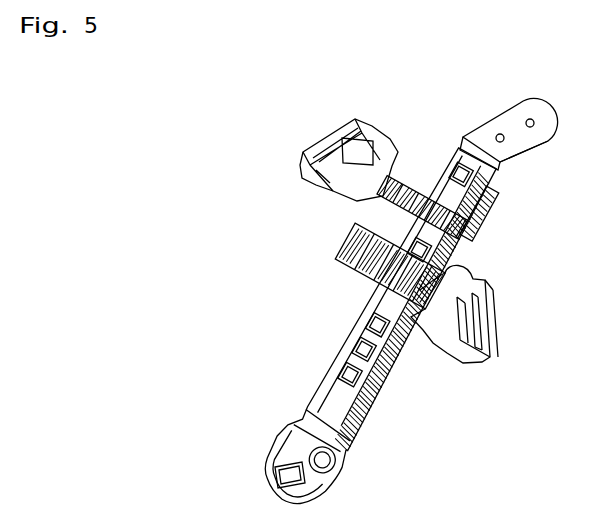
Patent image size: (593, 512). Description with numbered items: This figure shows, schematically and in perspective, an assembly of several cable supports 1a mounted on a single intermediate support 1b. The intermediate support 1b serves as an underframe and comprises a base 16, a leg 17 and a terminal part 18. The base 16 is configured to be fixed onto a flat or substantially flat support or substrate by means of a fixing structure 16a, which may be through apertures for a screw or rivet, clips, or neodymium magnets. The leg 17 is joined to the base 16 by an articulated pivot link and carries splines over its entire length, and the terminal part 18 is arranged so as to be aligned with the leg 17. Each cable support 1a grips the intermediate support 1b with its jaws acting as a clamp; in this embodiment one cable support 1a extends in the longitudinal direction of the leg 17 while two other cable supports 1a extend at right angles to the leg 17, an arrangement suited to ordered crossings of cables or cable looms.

The cable support 1a is at (304, 125).
The intermediate support 1b is at (453, 132).
The base 16 is at (503, 110).
The fixing structure 16a is at (497, 161).
The leg 17 is at (407, 233).
The terminal part 18 is at (403, 352).